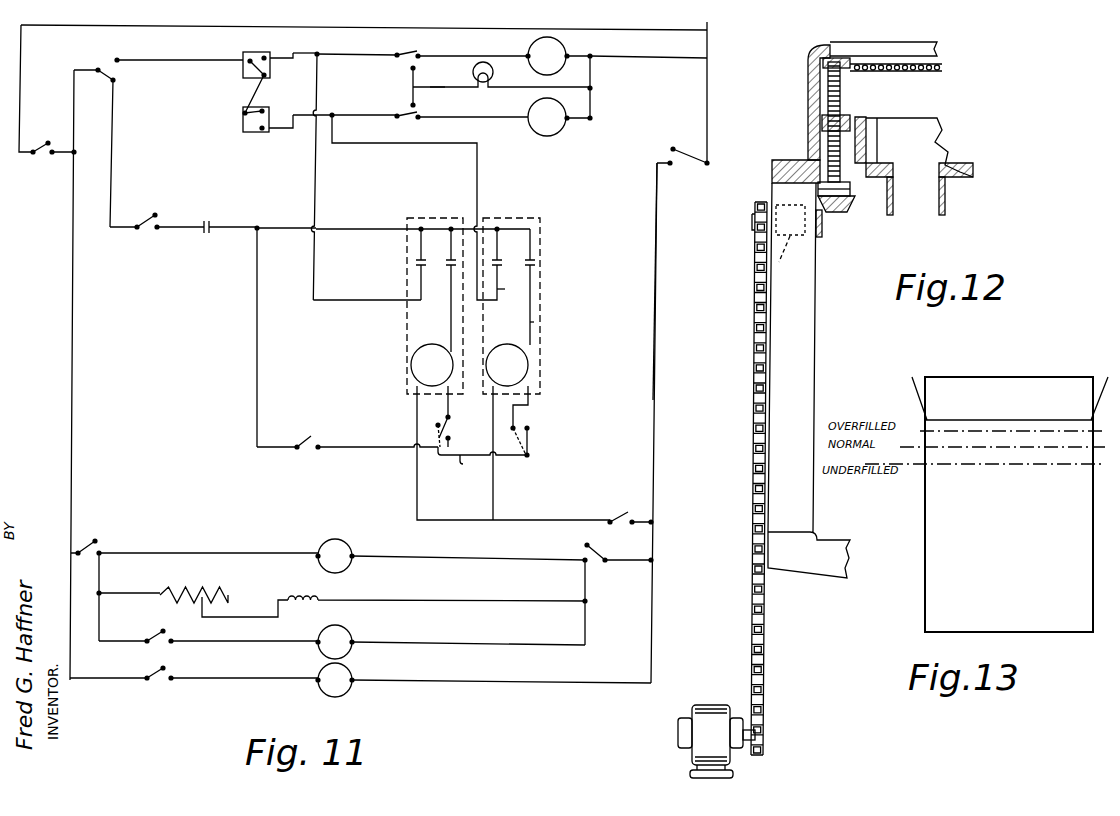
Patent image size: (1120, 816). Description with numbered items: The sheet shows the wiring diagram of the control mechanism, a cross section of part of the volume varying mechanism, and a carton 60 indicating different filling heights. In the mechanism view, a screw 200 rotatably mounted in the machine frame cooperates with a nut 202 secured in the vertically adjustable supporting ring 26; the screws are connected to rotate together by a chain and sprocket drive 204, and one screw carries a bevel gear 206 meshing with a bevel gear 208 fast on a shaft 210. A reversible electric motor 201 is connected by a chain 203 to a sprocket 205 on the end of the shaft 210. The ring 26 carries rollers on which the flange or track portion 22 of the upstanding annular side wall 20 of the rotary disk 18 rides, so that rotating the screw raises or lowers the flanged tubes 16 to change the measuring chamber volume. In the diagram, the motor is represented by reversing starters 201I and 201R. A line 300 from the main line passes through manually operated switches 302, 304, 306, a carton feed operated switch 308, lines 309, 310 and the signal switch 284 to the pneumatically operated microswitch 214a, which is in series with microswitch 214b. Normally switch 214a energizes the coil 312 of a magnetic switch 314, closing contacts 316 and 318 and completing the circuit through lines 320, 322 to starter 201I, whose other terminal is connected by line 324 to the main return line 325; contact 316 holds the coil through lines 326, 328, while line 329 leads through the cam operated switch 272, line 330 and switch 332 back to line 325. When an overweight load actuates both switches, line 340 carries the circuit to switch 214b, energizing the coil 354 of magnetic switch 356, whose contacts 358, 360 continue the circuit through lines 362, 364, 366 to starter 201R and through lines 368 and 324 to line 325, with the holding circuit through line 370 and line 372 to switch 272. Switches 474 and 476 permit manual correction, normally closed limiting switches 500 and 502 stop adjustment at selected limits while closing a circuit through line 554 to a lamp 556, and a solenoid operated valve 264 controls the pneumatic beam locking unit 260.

In FIG. 11, the line 300 is at (341, 29).
In FIG. 11, the manually operated switch 302 is at (46, 159).
In FIG. 11, the manually operated switch 304 is at (97, 62).
In FIG. 11, the manually operated switch 306 is at (149, 235).
In FIG. 11, the carton feed operated switch 308 is at (203, 237).
In FIG. 11, the line 309 is at (222, 228).
In FIG. 11, the line 310 is at (255, 338).
In FIG. 11, the coil 312 is at (432, 395).
In FIG. 11, the magnetic switch 314 is at (429, 219).
In FIG. 11, the contact 316 is at (445, 264).
In FIG. 11, the contact 318 is at (415, 261).
In FIG. 11, the line 320 is at (312, 181).
In FIG. 11, the line 322 is at (361, 54).
In FIG. 11, the line 324 is at (656, 59).
In FIG. 11, the line 326 is at (341, 229).
In FIG. 11, the line 328 is at (447, 335).
In FIG. 11, the line 329 is at (418, 503).
In FIG. 11, the line 330 is at (656, 313).
In FIG. 11, the manually operated switch 332 is at (662, 151).
In FIG. 11, the line 340 is at (464, 470).
In FIG. 11, the coil 354 is at (507, 399).
In FIG. 11, the magnetic switch 356 is at (517, 221).
In FIG. 11, the contact 358 is at (537, 267).
In FIG. 11, the contact 360 is at (505, 263).
In FIG. 11, the line 362 is at (505, 291).
In FIG. 11, the line 364 is at (480, 171).
In FIG. 11, the line 366 is at (375, 115).
In FIG. 11, the line 368 is at (594, 80).
In FIG. 11, the line 370 is at (534, 323).
In FIG. 11, the line 372 is at (494, 499).
In FIG. 11, the switch 474 is at (244, 77).
In FIG. 11, the switch 476 is at (245, 131).
In FIG. 11, the limiting switch 500 is at (414, 46).
In FIG. 11, the limiting switch 502 is at (407, 120).
In FIG. 11, the line 554 is at (436, 90).
In FIG. 11, the lamp 556 is at (500, 51).
In FIG. 11, the motor reversing starter 201I is at (568, 54).
In FIG. 11, the motor reversing starter 201R is at (553, 136).
In FIG. 11, the microswitch 214a is at (428, 425).
In FIG. 11, the microswitch 214b is at (531, 419).
In FIG. 11, the weighing beam locking unit 260 is at (162, 691).
In FIG. 11, the solenoid operated valve 264 is at (341, 691).
In FIG. 11, the cam operated switch 272 is at (631, 514).
In FIG. 11, the signal switch 284 is at (306, 452).
In FIG. 12, the reversible electric motor 201 is at (718, 705).
In FIG. 12, the chain 203 is at (756, 446).
In FIG. 12, the sprocket 205 is at (757, 212).
In FIG. 12, the bevel gear 206 is at (852, 206).
In FIG. 12, the bevel gear 208 is at (823, 238).
In FIG. 12, the shaft 210 is at (792, 240).
In FIG. 12, the screw 200 is at (842, 88).
In FIG. 12, the nut 202 is at (851, 118).
In FIG. 12, the chain and sprocket drive 204 is at (932, 72).
In FIG. 12, the flange or track portion 22 is at (866, 126).
In FIG. 12, the upstanding annular side wall 20 is at (884, 150).
In FIG. 12, the rotary disk 18 is at (974, 178).
In FIG. 12, the flanged tube 16 is at (946, 205).
In FIG. 12, the vertically adjustable supporting ring 26 is at (821, 121).
In FIG. 12, the main return line 325 is at (738, 80).
In FIG. 13, the carton 60 is at (1010, 504).